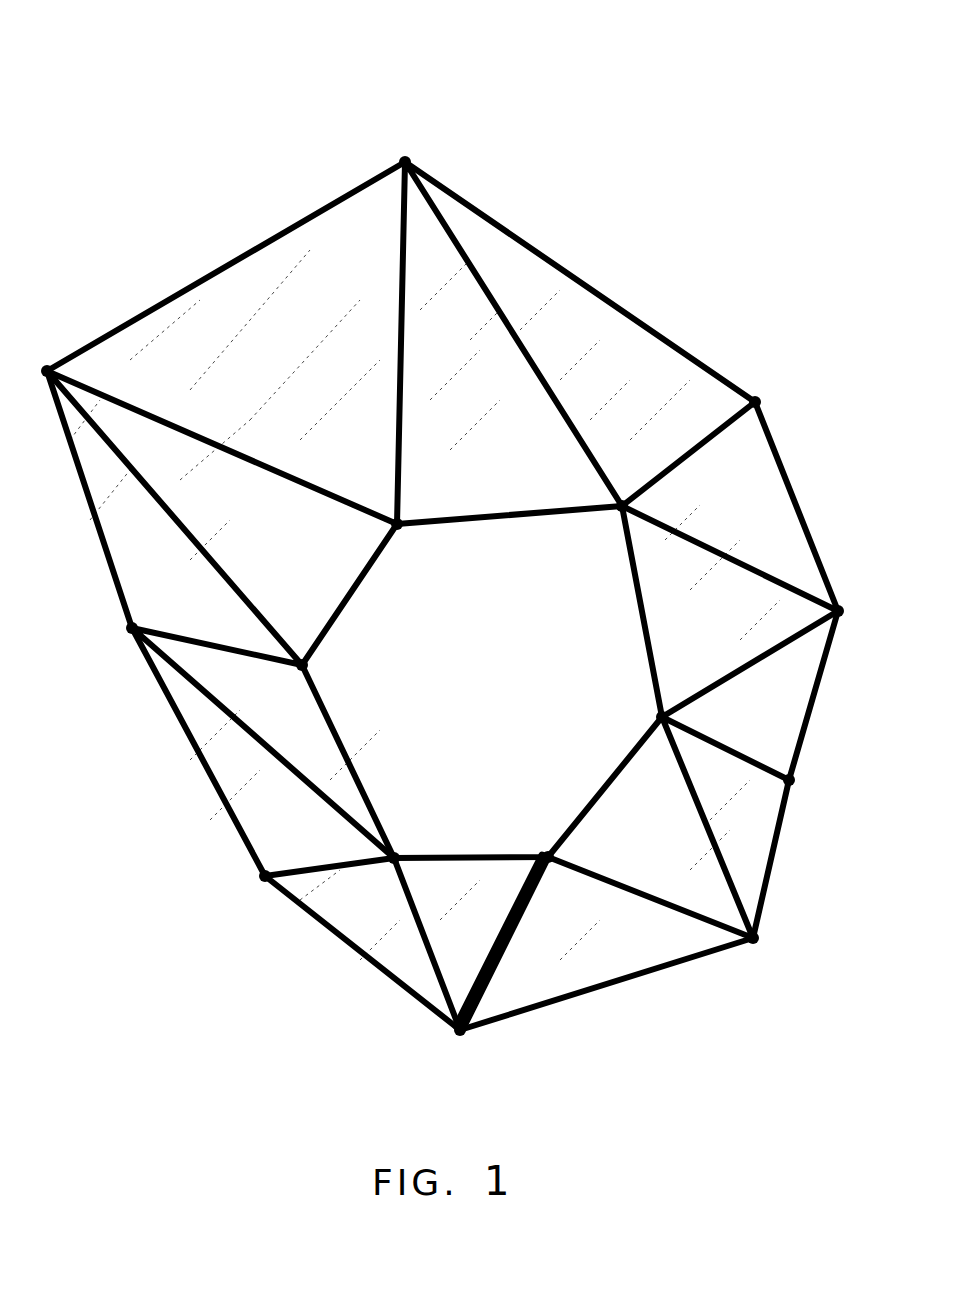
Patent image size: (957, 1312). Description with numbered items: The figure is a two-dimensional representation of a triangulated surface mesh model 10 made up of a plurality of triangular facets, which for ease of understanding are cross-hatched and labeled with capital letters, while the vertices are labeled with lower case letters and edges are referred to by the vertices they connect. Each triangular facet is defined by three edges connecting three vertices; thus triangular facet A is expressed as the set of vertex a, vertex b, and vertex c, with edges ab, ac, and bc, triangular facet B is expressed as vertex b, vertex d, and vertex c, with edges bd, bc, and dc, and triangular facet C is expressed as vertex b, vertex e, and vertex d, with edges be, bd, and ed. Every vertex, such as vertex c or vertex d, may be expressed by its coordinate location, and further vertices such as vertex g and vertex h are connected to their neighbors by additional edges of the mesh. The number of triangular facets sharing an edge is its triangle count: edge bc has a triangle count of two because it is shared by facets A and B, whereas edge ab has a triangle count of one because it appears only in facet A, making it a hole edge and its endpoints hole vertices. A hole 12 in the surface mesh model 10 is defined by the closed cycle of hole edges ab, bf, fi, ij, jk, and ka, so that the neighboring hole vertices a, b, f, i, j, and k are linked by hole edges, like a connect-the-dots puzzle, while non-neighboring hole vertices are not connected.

The surface mesh model 10 is at (698, 125).
The hole 12 is at (579, 773).
The vertex a is at (400, 542).
The vertex b is at (609, 526).
The vertex c is at (402, 145).
The vertex d is at (767, 386).
The vertex e is at (850, 612).
The vertex f is at (640, 707).
The vertex g is at (804, 789).
The vertex h is at (766, 952).
The vertex i is at (542, 837).
The vertex j is at (397, 840).
The vertex k is at (320, 669).
The triangular facet A is at (509, 343).
The triangular facet B is at (580, 334).
The triangular facet C is at (730, 506).